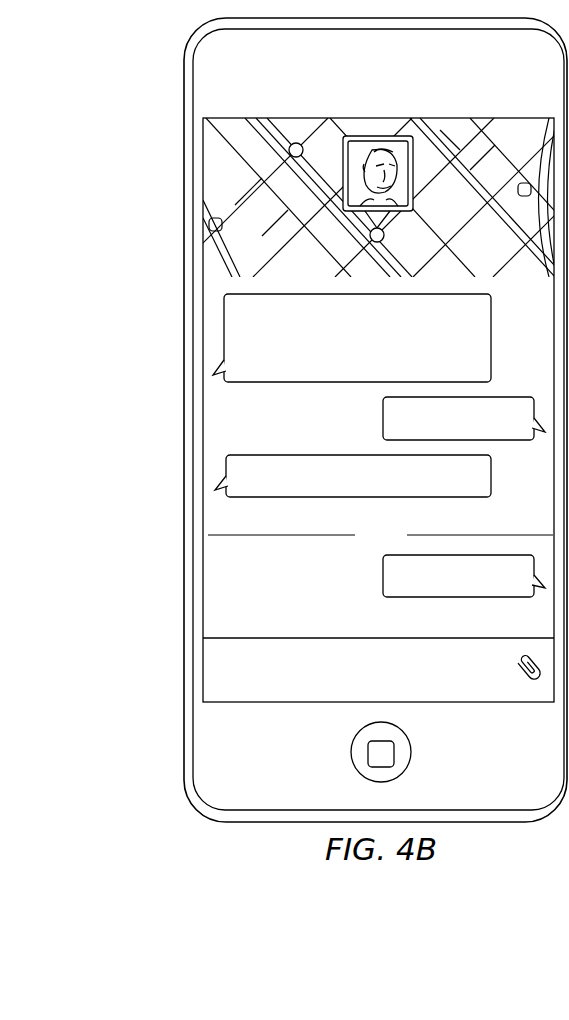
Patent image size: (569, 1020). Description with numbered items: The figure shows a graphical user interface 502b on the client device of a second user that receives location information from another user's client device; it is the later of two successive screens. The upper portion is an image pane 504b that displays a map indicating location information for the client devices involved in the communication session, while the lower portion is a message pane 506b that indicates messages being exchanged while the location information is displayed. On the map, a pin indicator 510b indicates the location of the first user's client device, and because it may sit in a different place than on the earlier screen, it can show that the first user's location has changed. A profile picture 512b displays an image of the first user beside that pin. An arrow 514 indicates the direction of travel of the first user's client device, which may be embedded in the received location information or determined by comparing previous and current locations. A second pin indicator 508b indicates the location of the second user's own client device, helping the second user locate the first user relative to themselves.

The graphical user interface 502b is at (181, 97).
The image pane 504b is at (217, 178).
The message pane 506b is at (217, 556).
The pin indicator 508b is at (296, 143).
The pin indicator 510b is at (385, 236).
The profile picture 512b is at (380, 133).
The arrow 514 is at (357, 243).